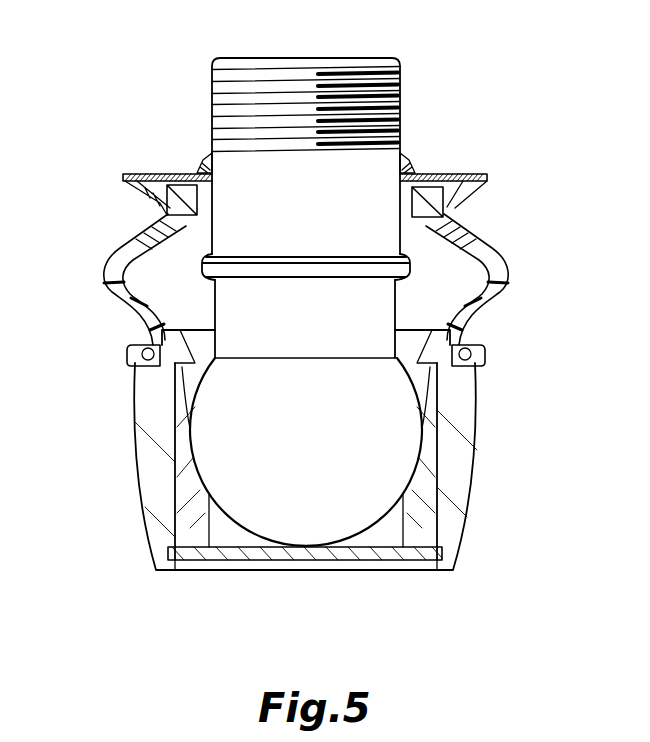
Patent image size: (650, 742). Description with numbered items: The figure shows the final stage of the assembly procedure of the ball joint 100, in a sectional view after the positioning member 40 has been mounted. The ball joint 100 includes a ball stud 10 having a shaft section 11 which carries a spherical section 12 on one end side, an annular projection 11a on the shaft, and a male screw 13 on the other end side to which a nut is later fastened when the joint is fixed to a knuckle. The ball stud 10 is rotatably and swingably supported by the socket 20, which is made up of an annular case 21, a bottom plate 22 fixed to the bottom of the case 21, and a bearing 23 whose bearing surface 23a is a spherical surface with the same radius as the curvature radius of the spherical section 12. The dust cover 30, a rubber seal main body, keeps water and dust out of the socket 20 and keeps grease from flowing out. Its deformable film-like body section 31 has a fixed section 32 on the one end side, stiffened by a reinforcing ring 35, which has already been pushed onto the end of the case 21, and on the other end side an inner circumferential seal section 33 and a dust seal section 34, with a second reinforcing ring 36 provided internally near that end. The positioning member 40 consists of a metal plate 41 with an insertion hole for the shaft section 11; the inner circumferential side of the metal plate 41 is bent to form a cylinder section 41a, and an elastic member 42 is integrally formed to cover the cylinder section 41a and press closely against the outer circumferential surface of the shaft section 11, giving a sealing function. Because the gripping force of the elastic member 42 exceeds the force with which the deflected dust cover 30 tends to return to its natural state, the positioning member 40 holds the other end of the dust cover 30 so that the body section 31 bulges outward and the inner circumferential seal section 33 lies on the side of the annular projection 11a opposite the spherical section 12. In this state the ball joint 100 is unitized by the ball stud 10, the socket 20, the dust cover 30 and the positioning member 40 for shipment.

The ball joint 100 is at (484, 62).
The ball stud 10 is at (406, 114).
The shaft section 11 is at (352, 178).
The annular projection 11a is at (231, 258).
The spherical section 12 is at (203, 405).
The male screw 13 is at (256, 80).
The socket 20 is at (476, 534).
The case 21 is at (466, 476).
The bottom plate 22 is at (380, 553).
The bearing 23 is at (195, 553).
The bearing surface 23a is at (205, 500).
The dust cover 30 is at (489, 206).
The body section 31 is at (490, 248).
The fixed section 32 is at (483, 343).
The inner circumferential seal section 33 is at (208, 152).
The dust seal section 34 is at (143, 190).
The reinforcing ring 35 is at (130, 347).
The reinforcing ring 36 is at (163, 207).
The positioning member 40 is at (489, 139).
The metal plate 41 is at (487, 172).
The cylinder section 41a is at (415, 172).
The elastic member 42 is at (197, 165).